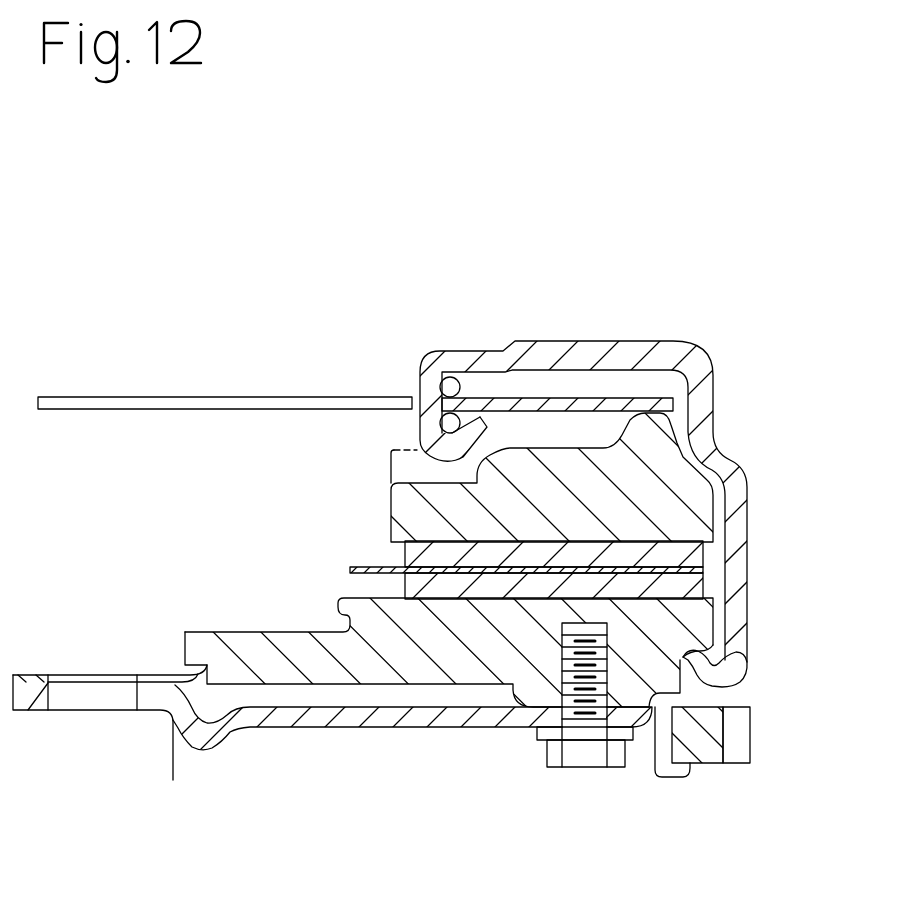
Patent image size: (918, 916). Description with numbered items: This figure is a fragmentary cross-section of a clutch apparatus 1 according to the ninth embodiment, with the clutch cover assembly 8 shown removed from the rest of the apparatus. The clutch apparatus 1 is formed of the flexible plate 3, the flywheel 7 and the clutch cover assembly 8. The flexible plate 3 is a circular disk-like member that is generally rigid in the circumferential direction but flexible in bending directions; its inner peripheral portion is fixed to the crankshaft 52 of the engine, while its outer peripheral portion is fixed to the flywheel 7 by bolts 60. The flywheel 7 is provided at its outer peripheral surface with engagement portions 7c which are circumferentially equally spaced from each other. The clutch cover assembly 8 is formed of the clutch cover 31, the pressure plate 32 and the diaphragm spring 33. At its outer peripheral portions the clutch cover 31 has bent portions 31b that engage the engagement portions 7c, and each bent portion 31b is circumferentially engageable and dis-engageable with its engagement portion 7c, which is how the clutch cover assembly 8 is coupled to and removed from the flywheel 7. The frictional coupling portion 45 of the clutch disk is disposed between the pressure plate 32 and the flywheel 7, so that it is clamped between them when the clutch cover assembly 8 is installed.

The clutch apparatus 1 is at (460, 539).
The clutch cover assembly 8 is at (460, 498).
The clutch cover 31 is at (703, 365).
The bent portions 31b is at (703, 673).
The pressure plate 32 is at (657, 447).
The diaphragm spring 33 is at (262, 395).
The frictional coupling portion 45 is at (405, 556).
The flywheel 7 is at (547, 745).
The engagement portions 7c is at (710, 653).
The flexible plate 3 is at (370, 724).
The crankshaft 52 is at (177, 760).
The bolts 60 is at (582, 755).